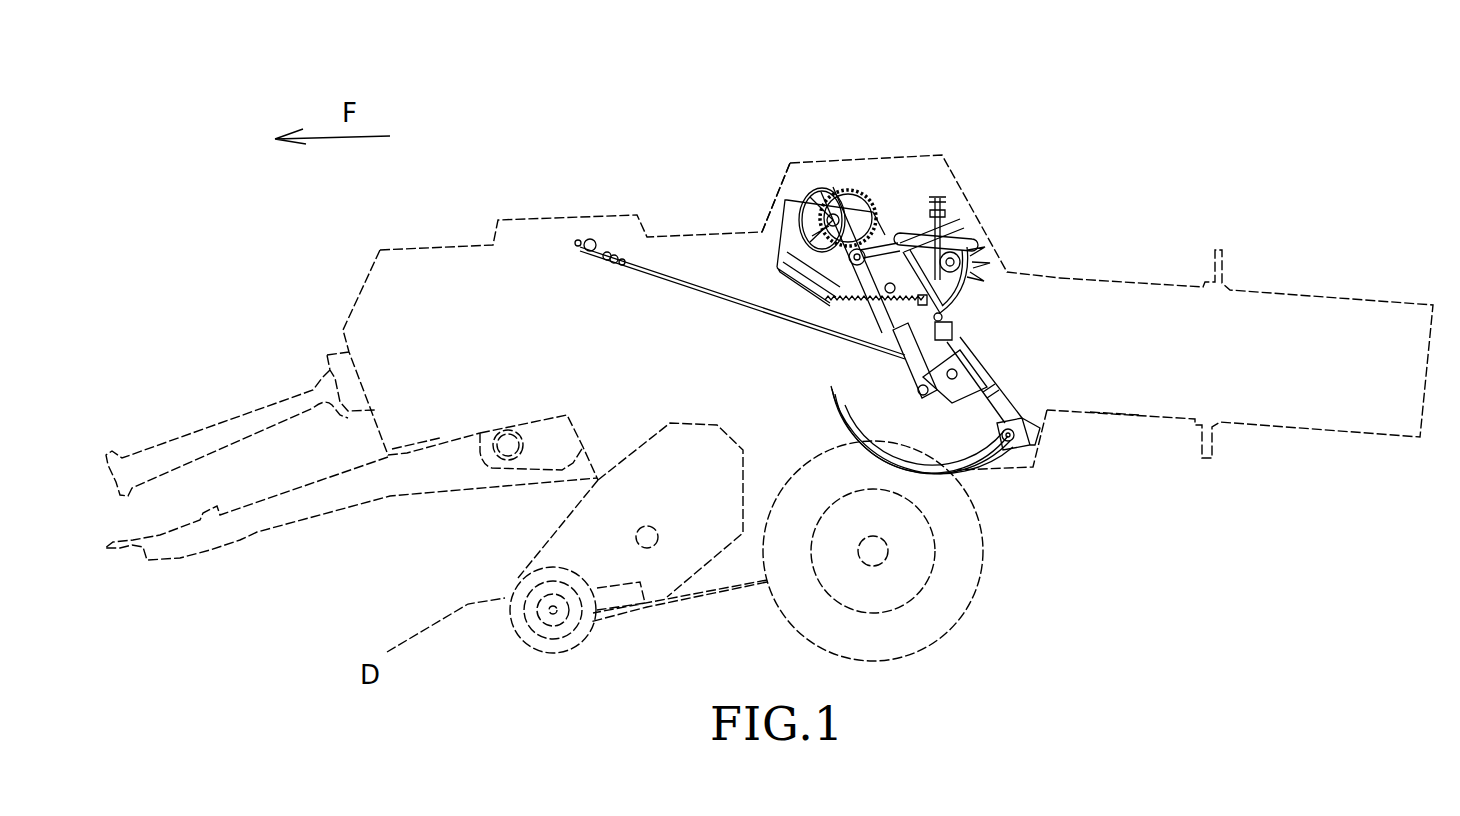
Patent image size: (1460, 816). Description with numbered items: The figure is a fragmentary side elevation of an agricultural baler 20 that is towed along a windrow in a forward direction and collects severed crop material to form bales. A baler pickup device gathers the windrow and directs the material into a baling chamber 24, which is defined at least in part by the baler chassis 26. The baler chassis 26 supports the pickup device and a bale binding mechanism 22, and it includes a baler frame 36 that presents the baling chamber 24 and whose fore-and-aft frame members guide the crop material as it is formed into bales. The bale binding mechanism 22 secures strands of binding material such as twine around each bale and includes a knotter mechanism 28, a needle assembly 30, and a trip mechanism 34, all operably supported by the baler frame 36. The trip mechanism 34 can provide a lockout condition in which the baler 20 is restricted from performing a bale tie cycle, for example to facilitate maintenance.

The agricultural baler 20 is at (1330, 130).
The bale binding mechanism 22 is at (1176, 122).
The baling chamber 24 is at (1076, 288).
The baler chassis 26 is at (767, 582).
The knotter mechanism 28 is at (844, 192).
The needle assembly 30 is at (993, 472).
The trip mechanism 34 is at (957, 300).
The baler frame 36 is at (1112, 413).